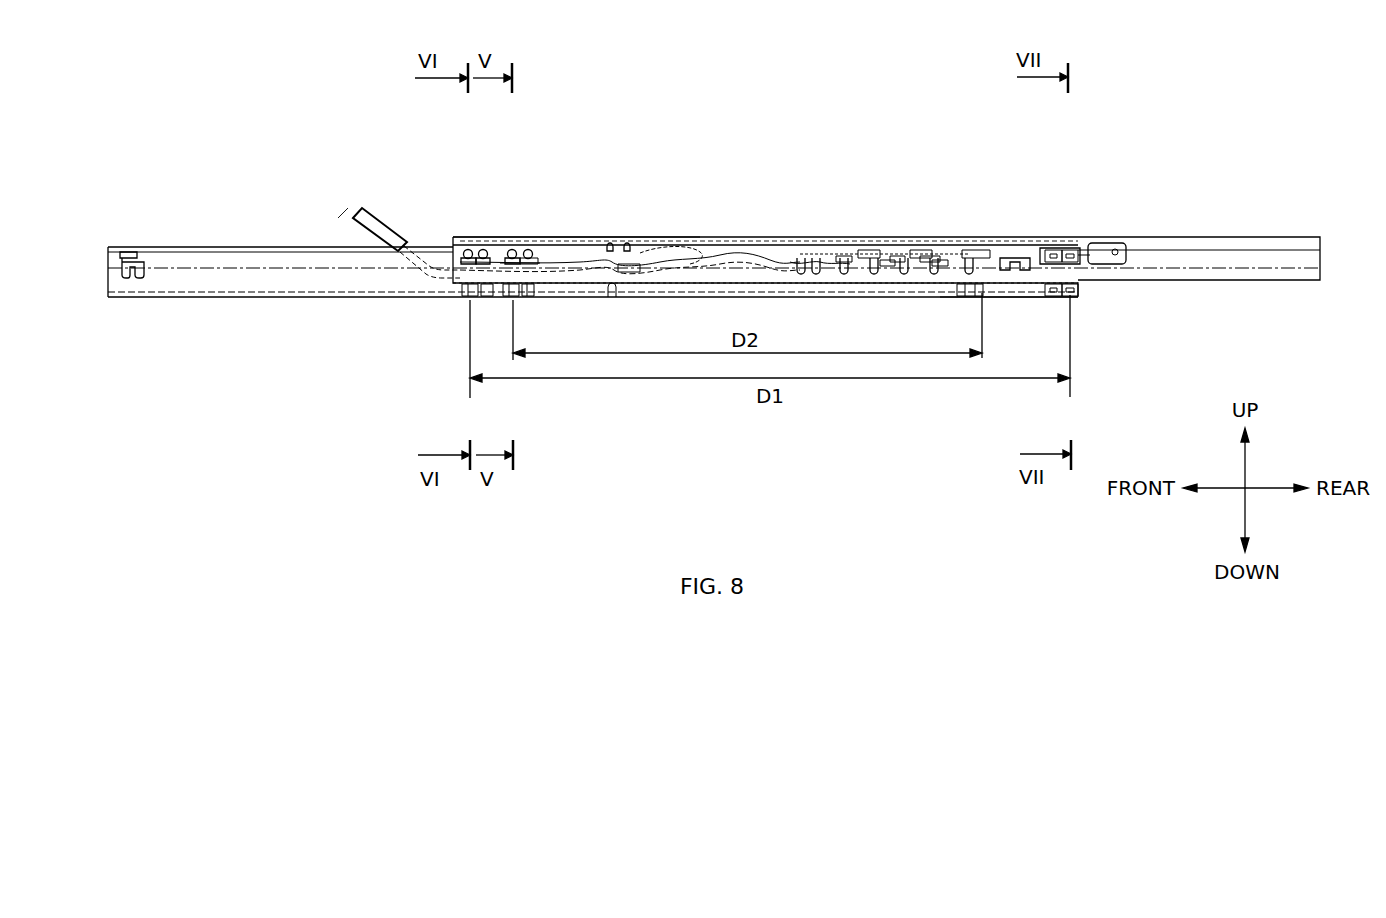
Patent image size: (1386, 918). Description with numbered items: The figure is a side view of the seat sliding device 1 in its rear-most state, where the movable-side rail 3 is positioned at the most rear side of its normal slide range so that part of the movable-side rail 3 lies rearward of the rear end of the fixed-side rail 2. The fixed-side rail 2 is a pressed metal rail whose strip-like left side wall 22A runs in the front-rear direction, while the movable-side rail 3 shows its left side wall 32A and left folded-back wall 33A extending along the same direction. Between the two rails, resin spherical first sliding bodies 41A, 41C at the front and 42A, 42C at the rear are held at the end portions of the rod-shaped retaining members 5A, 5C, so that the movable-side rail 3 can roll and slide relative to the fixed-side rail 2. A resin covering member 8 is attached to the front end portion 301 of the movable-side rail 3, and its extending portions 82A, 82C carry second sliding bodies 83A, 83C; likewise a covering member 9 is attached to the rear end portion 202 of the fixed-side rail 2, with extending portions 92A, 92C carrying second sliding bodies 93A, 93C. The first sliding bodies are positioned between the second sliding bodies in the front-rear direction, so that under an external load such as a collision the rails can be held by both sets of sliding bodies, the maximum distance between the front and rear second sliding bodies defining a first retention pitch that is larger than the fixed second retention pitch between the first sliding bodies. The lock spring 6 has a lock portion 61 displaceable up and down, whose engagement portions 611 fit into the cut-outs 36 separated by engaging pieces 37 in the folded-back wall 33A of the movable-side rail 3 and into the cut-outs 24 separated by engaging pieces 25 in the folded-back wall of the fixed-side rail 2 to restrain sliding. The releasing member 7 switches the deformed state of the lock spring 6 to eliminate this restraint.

The seat sliding device 1 is at (1115, 106).
The fixed-side rail 2 is at (170, 302).
The movable-side rail 3 is at (1226, 233).
The retaining member 5A is at (990, 297).
The retaining member 5C is at (546, 250).
The lock spring 6 is at (610, 270).
The releasing member 7 is at (350, 208).
The covering member 8 is at (455, 262).
The covering member 9 is at (1074, 250).
The left side wall 22A is at (242, 282).
The cut-out 24 is at (676, 270).
The engaging piece 25 is at (656, 270).
The left side wall 32A is at (1166, 242).
The left folded-back wall 33A is at (1215, 264).
The cut-out 36 is at (846, 282).
The engaging piece 37 is at (896, 272).
The first sliding body 41A is at (530, 297).
The first sliding body 41C is at (512, 250).
The first sliding body 42A is at (966, 292).
The first sliding body 42C is at (977, 250).
The lock portion 61 is at (866, 252).
The engagement portion 611 is at (922, 252).
The extending portion 82A is at (478, 297).
The extending portion 82C is at (483, 250).
The second sliding body 83A is at (465, 290).
The second sliding body 83C is at (469, 250).
The extending portion 92A is at (1052, 296).
The extending portion 92C is at (1056, 248).
The second sliding body 93A is at (1076, 292).
The second sliding body 93C is at (1070, 248).
The rear end portion 202 is at (1086, 268).
The front end portion 301 is at (456, 246).